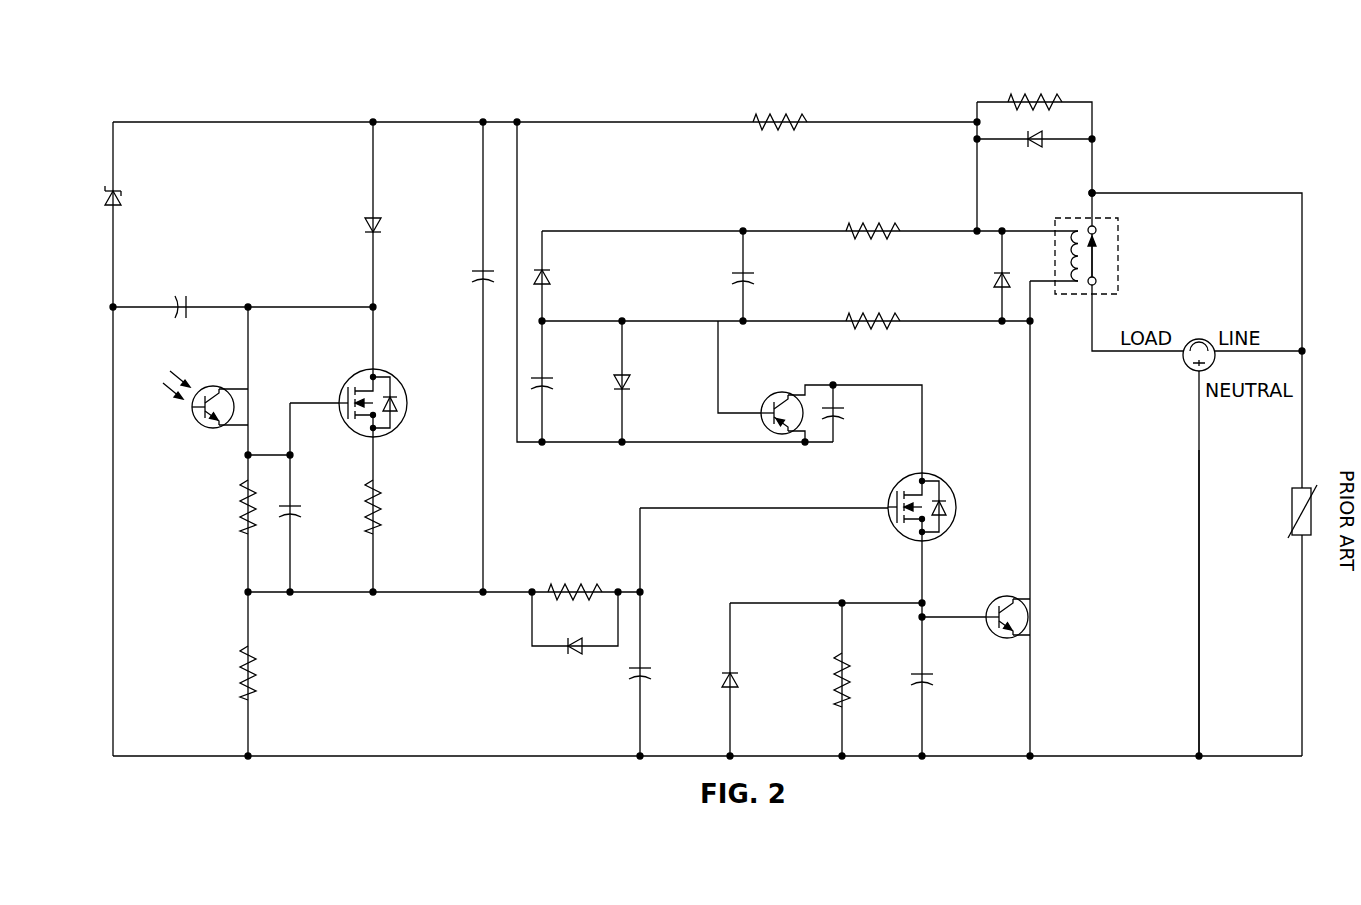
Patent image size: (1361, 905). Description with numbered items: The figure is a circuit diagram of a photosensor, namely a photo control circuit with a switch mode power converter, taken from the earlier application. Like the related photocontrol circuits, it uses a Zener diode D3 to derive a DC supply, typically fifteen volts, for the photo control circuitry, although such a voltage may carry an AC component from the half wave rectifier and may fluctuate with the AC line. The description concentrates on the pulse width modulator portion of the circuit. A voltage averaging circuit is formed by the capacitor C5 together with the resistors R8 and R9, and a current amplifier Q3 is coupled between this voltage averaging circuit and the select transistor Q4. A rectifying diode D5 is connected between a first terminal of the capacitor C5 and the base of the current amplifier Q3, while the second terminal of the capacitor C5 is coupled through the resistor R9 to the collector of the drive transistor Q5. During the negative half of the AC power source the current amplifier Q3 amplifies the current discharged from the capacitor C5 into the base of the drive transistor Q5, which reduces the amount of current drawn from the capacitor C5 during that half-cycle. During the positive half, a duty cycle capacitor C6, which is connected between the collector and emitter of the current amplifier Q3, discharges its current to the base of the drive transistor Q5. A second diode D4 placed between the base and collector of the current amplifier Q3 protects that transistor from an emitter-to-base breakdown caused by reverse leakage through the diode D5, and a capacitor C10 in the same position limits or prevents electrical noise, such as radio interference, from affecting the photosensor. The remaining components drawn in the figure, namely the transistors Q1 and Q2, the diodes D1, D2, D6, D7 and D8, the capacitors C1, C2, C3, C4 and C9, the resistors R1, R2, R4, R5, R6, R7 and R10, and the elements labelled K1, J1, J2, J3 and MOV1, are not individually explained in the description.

The Zener diode D3 is at (135, 197).
The capacitor 100N C1 is at (179, 286).
The diode D1 is at (332, 226).
The capacitor 2.2N C3 is at (459, 276).
The phototransistor IRB Q1 is at (198, 385).
The MOSFET 2N7000 Q2 is at (397, 378).
The resistor 5.1M R1 is at (218, 507).
The capacitor 47N C2 is at (309, 511).
The resistor 330K R4 is at (402, 507).
The resistor 470K R2 is at (218, 673).
The resistor 15M R5 is at (575, 567).
The diode 1N4007 D2 is at (577, 666).
The capacitor 470N C4 is at (667, 672).
The rectifying diode D5 is at (582, 276).
The capacitor of the voltage averaging circuit C5 is at (771, 276).
The capacitor C10 is at (568, 382).
The second diode D4 is at (661, 382).
The current amplifier Q3 is at (765, 389).
The duty cycle capacitor C6 is at (867, 412).
The resistor 100K 1/2W R6 is at (777, 96).
The resistor of the voltage averaging circuit R8 is at (873, 205).
The resistor R9 is at (873, 295).
The diode 1N4007 D6 is at (961, 276).
The resistor 120K 1/2W R10 is at (1045, 74).
The diode 1N4007 D7 is at (1030, 166).
The relay 48V 2.56K K1 is at (1140, 256).
The connector J1 is at (1117, 183).
The connector J2 (load/line receptacle) J2 is at (1171, 332).
The connector J3 (neutral) J3 is at (1211, 599).
The metal oxide varistor MOV1 is at (1280, 500).
The select transistor Q4 is at (889, 515).
The drive transistor Q5 is at (1044, 618).
The diode 1N4007 D8 is at (769, 677).
The resistor 1K R7 is at (859, 680).
The capacitor 100N C9 is at (950, 677).